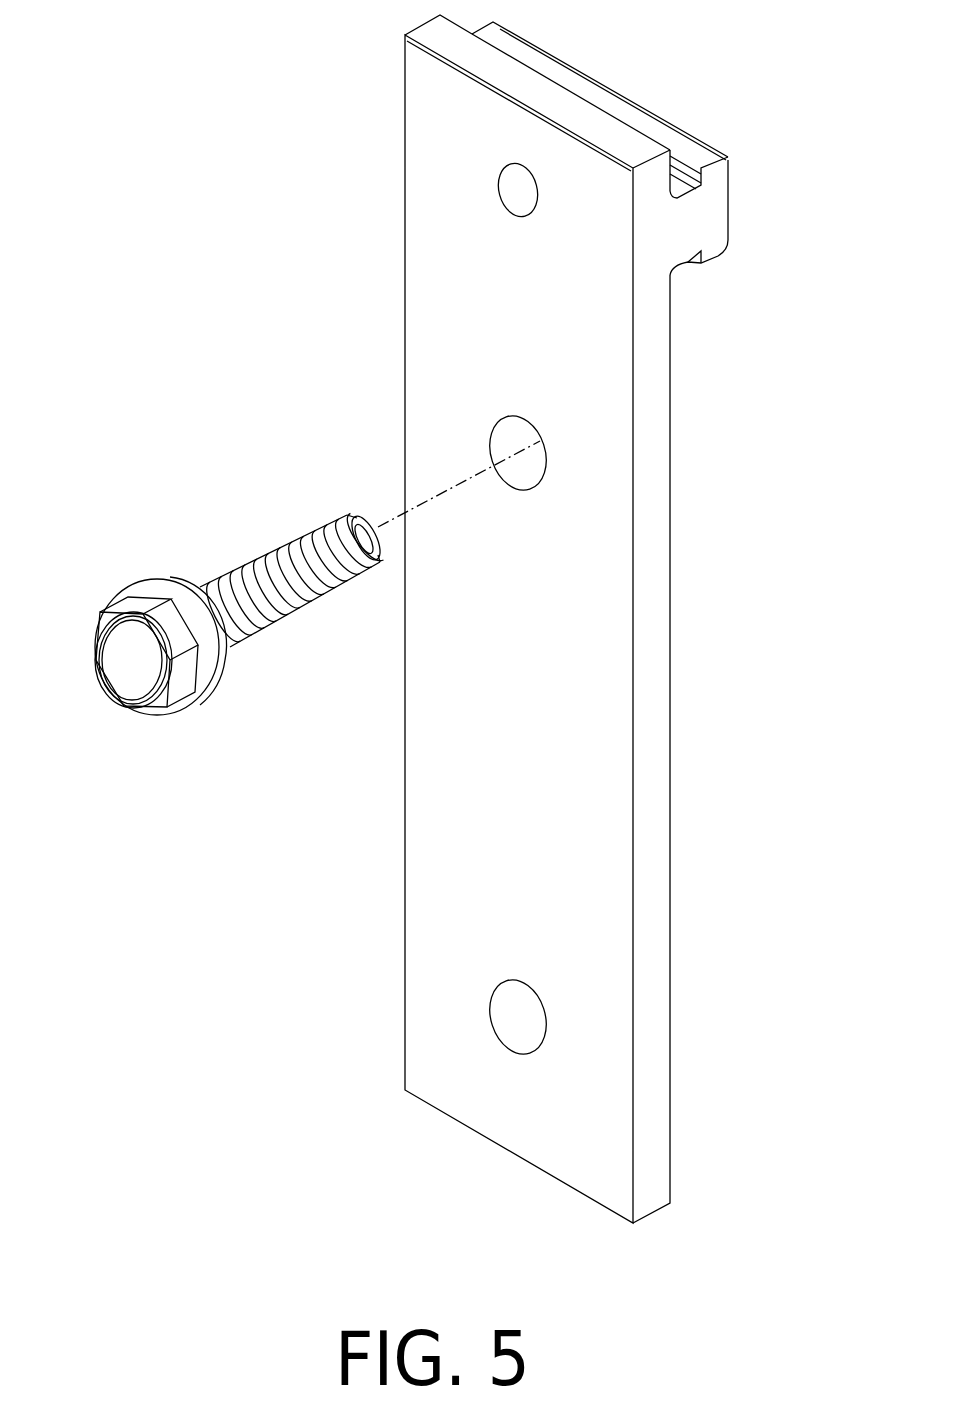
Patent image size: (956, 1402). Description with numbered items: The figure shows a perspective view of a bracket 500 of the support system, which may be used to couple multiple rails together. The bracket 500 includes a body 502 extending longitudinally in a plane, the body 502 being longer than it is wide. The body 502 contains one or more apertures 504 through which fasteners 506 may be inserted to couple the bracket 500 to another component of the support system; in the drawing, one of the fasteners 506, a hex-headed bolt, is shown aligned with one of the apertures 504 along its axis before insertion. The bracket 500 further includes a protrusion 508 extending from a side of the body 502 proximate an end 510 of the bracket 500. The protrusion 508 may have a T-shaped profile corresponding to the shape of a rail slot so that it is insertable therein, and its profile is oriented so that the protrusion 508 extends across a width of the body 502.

The bracket 500 is at (352, 132).
The body 502 is at (670, 550).
The apertures 504 is at (537, 1003).
The fasteners 506 is at (150, 608).
The protrusion 508 is at (722, 203).
The end 510 is at (630, 59).